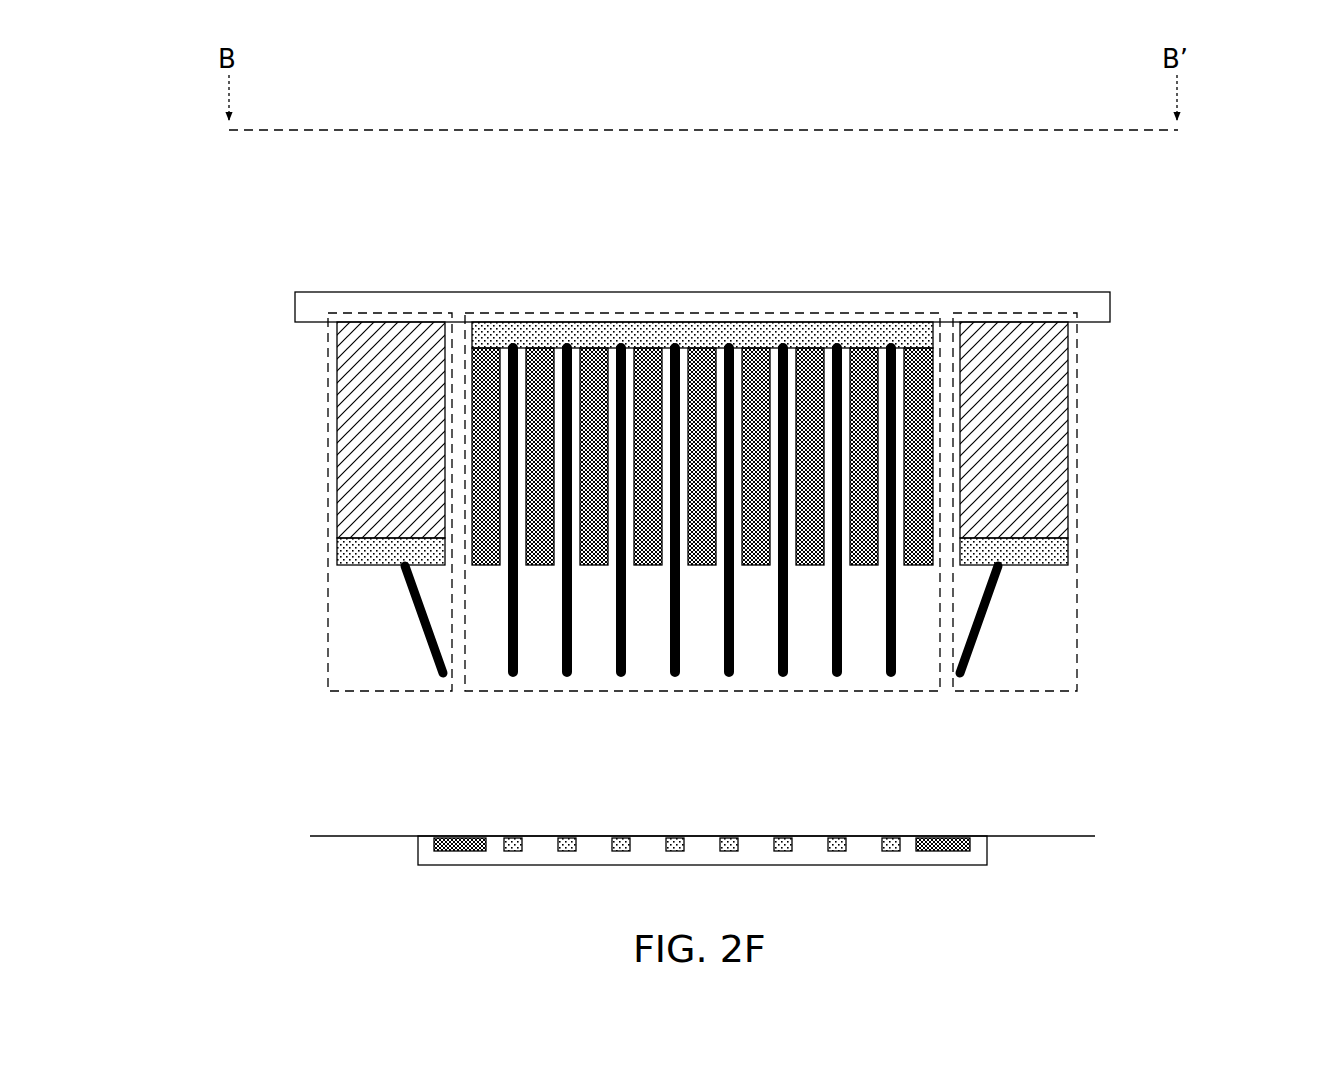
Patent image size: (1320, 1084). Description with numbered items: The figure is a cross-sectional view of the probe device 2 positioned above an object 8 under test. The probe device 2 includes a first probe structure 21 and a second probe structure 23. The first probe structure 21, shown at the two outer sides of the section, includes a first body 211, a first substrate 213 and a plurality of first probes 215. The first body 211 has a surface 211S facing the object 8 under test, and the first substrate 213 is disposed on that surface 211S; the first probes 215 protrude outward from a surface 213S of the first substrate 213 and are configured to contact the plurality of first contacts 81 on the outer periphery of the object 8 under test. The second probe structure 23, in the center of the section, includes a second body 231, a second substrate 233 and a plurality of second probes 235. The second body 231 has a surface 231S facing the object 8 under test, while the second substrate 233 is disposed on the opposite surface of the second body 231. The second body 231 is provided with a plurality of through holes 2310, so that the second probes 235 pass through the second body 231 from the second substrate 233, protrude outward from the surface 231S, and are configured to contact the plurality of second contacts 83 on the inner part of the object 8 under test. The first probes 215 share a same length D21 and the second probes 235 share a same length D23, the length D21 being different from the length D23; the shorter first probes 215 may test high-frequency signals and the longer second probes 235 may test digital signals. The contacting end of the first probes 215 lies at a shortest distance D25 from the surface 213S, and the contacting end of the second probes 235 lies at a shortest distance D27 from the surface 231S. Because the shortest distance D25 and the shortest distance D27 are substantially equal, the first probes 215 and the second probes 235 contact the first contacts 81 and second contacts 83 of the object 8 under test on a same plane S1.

The probe device 2 is at (243, 238).
The first probe structure 21 is at (328, 433).
The first body 211 is at (337, 355).
The surface of the first body 211S is at (383, 530).
The first substrate 213 is at (337, 545).
The surface of the first substrate 213S is at (353, 574).
The first probes 215 is at (405, 622).
The second probe structure 23 is at (918, 692).
The second body 231 is at (705, 352).
The surface of the second body 231S is at (488, 575).
The through holes 2310 is at (557, 575).
The second substrate 233 is at (908, 336).
The second probes 235 is at (572, 678).
The object under test 8 is at (988, 848).
The first contacts 81 is at (455, 837).
The second contacts 83 is at (893, 837).
The plane S1 is at (338, 836).
The length of the first probes D21 is at (447, 675).
The length of the second probes D23 is at (910, 568).
The shortest distance from the surface of the first substrate D25 is at (953, 568).
The shortest distance from the surface of the second body D27 is at (862, 568).